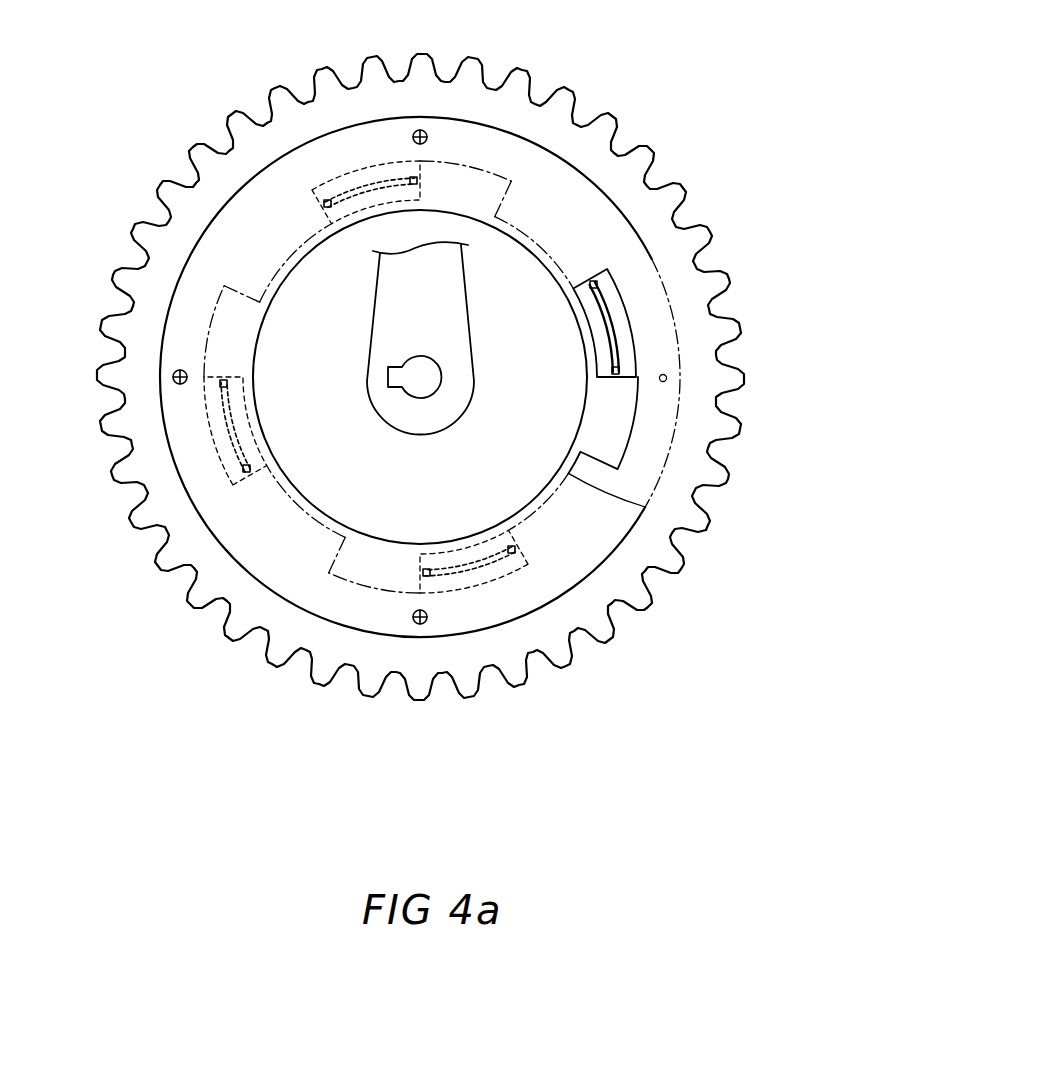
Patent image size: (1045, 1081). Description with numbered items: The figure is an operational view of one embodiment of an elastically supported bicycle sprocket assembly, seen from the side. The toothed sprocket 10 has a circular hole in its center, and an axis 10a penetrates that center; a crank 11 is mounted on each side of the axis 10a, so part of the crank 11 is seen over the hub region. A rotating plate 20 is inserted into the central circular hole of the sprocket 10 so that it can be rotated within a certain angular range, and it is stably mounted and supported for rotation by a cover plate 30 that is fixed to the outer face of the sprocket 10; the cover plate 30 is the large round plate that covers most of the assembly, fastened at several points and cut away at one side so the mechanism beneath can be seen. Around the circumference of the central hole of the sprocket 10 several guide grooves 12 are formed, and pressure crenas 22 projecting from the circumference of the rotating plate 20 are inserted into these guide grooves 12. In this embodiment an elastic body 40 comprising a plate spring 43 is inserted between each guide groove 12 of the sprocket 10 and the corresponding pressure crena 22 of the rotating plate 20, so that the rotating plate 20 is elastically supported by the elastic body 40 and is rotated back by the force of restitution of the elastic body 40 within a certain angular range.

The sprocket 10 is at (567, 85).
The axis 10a is at (425, 374).
The crank 11 is at (437, 310).
The guide groove 12 is at (612, 292).
The rotating plate 20 is at (310, 363).
The pressure crena 22 is at (612, 426).
The cover plate 30 is at (245, 212).
The elastic body 40 is at (613, 323).
The plate spring 43 is at (630, 718).